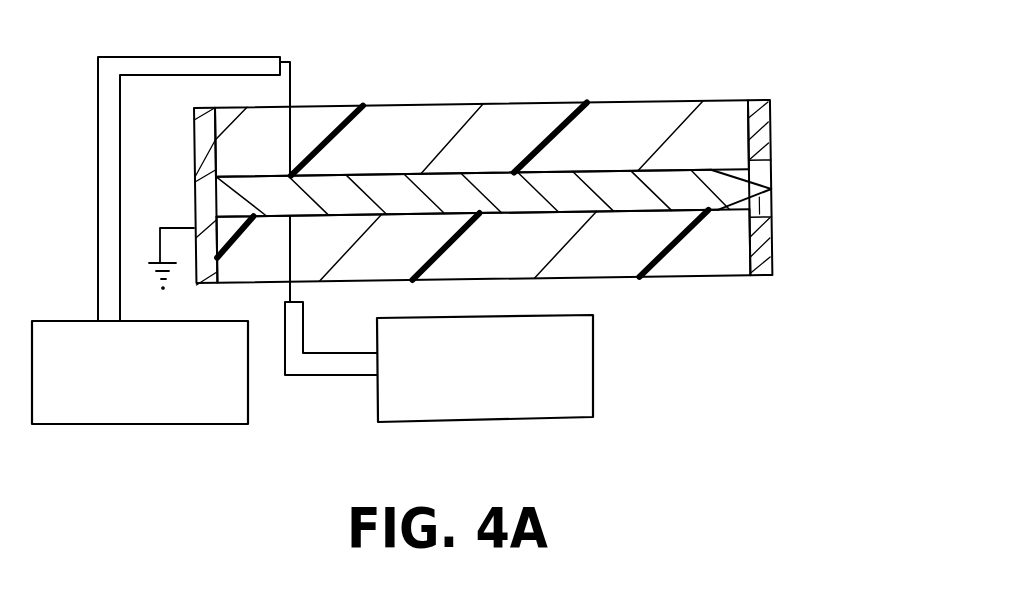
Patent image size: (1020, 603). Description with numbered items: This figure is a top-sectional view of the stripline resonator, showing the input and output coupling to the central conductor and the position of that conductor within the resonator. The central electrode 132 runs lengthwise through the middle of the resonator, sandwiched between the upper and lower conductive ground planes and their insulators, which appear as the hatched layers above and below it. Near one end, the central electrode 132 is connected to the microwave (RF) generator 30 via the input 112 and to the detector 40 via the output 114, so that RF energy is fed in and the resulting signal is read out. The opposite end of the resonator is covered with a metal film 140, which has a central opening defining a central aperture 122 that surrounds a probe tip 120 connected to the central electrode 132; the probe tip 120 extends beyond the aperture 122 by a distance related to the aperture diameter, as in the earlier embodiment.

The microwave (RF) generator 30 is at (73, 320).
The detector 40 is at (532, 367).
The input 112 is at (293, 125).
The output 114 is at (292, 252).
The probe tip 120 is at (770, 188).
The central aperture 122 is at (758, 200).
The central electrode 132 is at (508, 173).
The metal film 140 is at (800, 174).